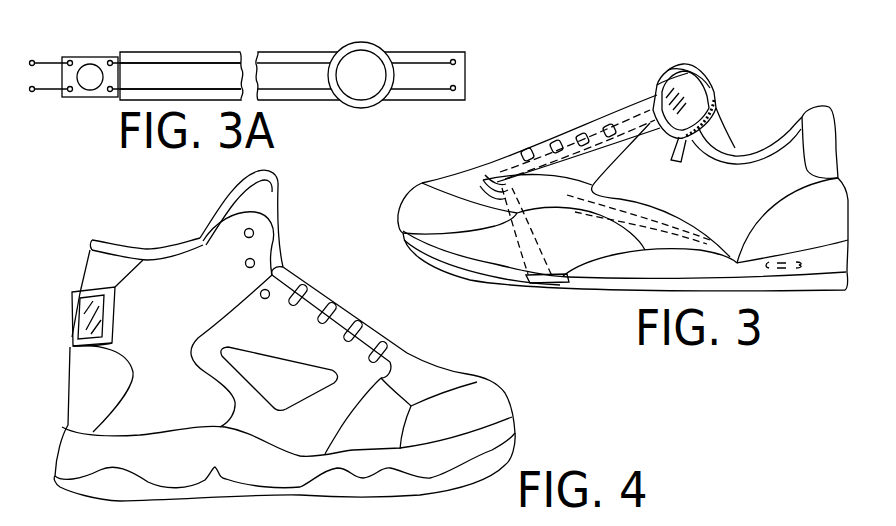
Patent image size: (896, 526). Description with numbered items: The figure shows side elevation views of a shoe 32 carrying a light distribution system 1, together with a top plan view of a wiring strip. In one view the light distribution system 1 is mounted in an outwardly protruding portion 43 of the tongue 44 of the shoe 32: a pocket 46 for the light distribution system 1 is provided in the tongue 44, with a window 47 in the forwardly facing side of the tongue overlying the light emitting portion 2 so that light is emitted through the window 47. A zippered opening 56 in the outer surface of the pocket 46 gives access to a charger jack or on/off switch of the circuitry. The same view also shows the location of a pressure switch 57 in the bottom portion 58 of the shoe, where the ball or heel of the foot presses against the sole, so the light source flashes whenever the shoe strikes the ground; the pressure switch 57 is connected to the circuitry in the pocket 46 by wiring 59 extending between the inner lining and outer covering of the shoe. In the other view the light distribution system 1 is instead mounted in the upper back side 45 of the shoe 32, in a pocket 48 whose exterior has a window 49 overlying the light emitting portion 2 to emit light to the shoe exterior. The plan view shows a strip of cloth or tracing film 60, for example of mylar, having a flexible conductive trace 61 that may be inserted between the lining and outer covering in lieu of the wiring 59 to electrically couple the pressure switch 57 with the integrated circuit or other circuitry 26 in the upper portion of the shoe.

In FIG. 3, the light distribution system 1 is at (651, 82).
In FIG. 4, the light distribution system 1 is at (61, 339).
In FIG. 3, the light emitting portion 2 is at (693, 100).
In FIG. 4, the light emitting portion 2 is at (69, 312).
In FIG. 3A, the circuitry 26 is at (78, 56).
In FIG. 3, the shoe 32 is at (599, 115).
In FIG. 4, the shoe 32 is at (341, 289).
In FIG. 3, the outwardly protruding portion 43 is at (698, 84).
In FIG. 3, the tongue 44 is at (718, 107).
In FIG. 4, the upper back side 45 is at (93, 263).
In FIG. 3, the pocket 46 is at (679, 76).
In FIG. 3, the window 47 is at (659, 99).
In FIG. 4, the pocket 48 is at (78, 350).
In FIG. 4, the window 49 is at (117, 287).
In FIG. 3, the zippered opening 56 is at (700, 127).
In FIG. 3A, the pressure switch 57 is at (381, 47).
In FIG. 3, the pressure switch 57 is at (546, 284).
In FIG. 3, the bottom portion 58 is at (618, 279).
In FIG. 3, the wiring 59 is at (483, 180).
In FIG. 3A, the strip of cloth or tracing film 60 is at (282, 52).
In FIG. 3A, the flexible conductive trace 61 is at (305, 96).